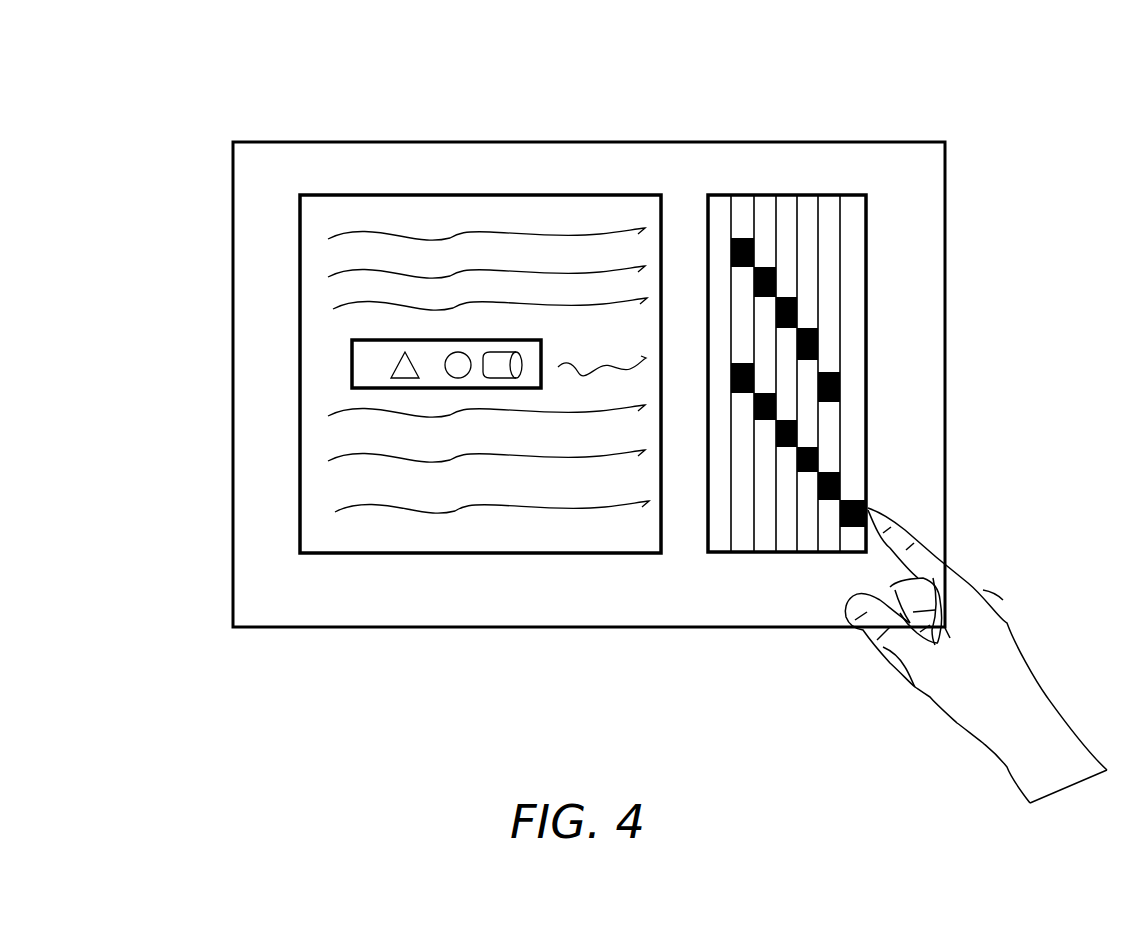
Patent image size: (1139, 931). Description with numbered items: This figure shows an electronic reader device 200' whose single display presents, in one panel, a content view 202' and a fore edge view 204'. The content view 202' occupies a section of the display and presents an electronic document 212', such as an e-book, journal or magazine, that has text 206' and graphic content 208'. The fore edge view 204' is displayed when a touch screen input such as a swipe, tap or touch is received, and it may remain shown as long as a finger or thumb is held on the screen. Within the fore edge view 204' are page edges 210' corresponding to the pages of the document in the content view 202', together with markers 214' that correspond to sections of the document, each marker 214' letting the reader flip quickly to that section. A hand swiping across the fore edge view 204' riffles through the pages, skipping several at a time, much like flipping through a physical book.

The electronic reader device 200' is at (584, 353).
The content view 202' is at (396, 369).
The fore edge view 204' is at (874, 310).
The text 206' is at (396, 370).
The graphic content 208' is at (334, 355).
The page edges 210' is at (874, 373).
The electronic document 212' is at (480, 431).
The markers 214' is at (938, 490).